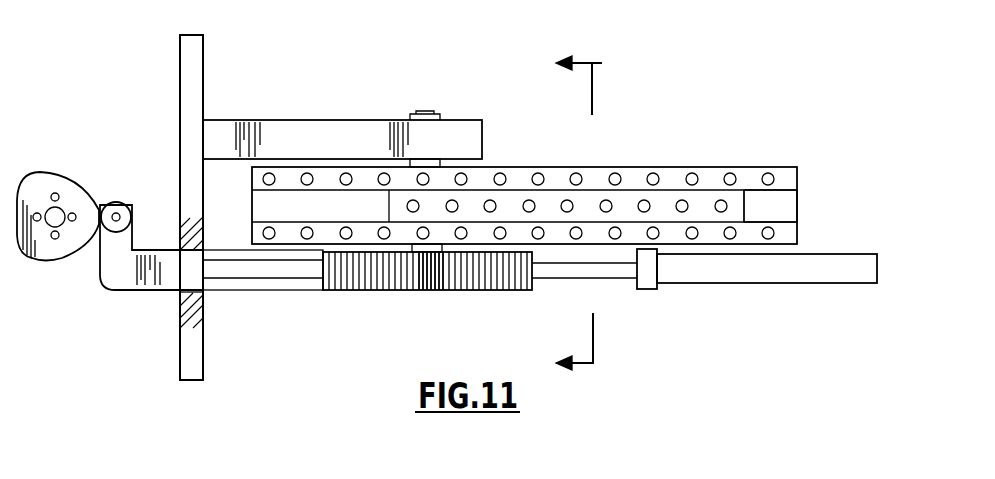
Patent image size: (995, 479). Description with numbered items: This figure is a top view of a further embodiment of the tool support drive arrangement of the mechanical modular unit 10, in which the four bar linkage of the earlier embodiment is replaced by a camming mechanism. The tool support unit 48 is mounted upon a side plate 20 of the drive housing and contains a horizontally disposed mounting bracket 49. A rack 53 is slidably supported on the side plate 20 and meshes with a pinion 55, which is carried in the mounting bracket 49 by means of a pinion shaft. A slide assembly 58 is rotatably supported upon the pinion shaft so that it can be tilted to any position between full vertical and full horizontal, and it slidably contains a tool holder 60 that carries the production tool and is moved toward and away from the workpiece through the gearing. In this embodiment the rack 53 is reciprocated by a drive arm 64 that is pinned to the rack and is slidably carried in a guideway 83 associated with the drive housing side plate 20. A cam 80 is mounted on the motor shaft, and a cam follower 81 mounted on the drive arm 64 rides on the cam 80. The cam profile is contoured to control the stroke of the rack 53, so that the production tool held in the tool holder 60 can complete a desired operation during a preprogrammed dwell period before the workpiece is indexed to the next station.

The mechanical modular unit 10 is at (596, 217).
The side plate 20 is at (205, 70).
The tool support unit 48 is at (602, 151).
The mounting bracket 49 is at (318, 120).
The rack 53 is at (362, 290).
The pinion 55 is at (427, 290).
The slide assembly 58 is at (524, 172).
The tool holder 60 is at (735, 200).
The drive arm 64 is at (115, 268).
The cam 80 is at (50, 173).
The cam follower 81 is at (113, 204).
The guideway 83 is at (178, 295).